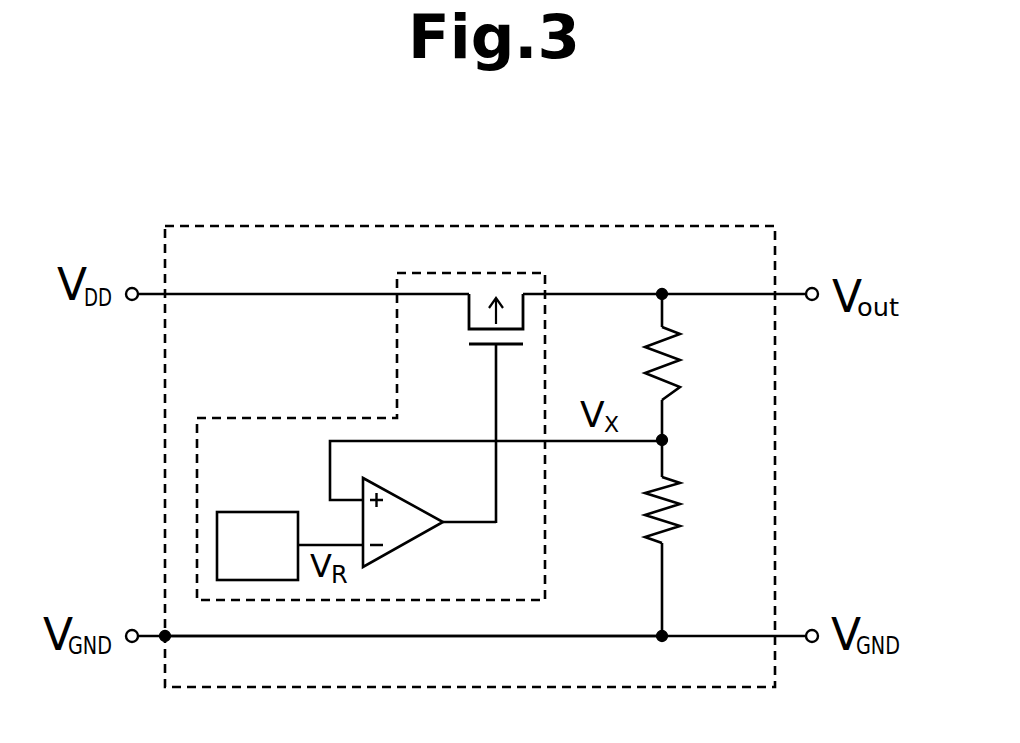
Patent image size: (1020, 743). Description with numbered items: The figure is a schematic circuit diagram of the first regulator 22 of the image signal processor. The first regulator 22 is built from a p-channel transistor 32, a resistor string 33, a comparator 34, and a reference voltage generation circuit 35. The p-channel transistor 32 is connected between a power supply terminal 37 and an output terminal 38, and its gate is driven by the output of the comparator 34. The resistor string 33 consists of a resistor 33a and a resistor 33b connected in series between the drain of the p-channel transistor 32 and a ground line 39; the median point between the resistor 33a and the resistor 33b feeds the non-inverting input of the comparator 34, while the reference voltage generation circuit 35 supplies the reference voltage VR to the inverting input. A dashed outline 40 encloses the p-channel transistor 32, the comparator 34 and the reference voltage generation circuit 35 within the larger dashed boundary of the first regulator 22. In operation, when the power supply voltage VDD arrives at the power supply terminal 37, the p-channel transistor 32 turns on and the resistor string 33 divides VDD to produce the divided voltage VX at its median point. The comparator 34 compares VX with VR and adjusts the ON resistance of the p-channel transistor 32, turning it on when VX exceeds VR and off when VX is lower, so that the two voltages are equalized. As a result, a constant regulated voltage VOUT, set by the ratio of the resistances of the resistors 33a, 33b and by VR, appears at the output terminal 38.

The first regulator 22 is at (619, 226).
The p-channel transistor 32 is at (468, 310).
The resistor string 33 is at (659, 454).
The resistor 33a is at (648, 360).
The resistor 33b is at (626, 533).
The comparator 34 is at (403, 500).
The reference voltage generation circuit 35 is at (262, 512).
The power supply terminal 37 is at (134, 284).
The output terminal 38 is at (812, 287).
The ground line 39 is at (583, 640).
The control circuit 40 is at (520, 272).